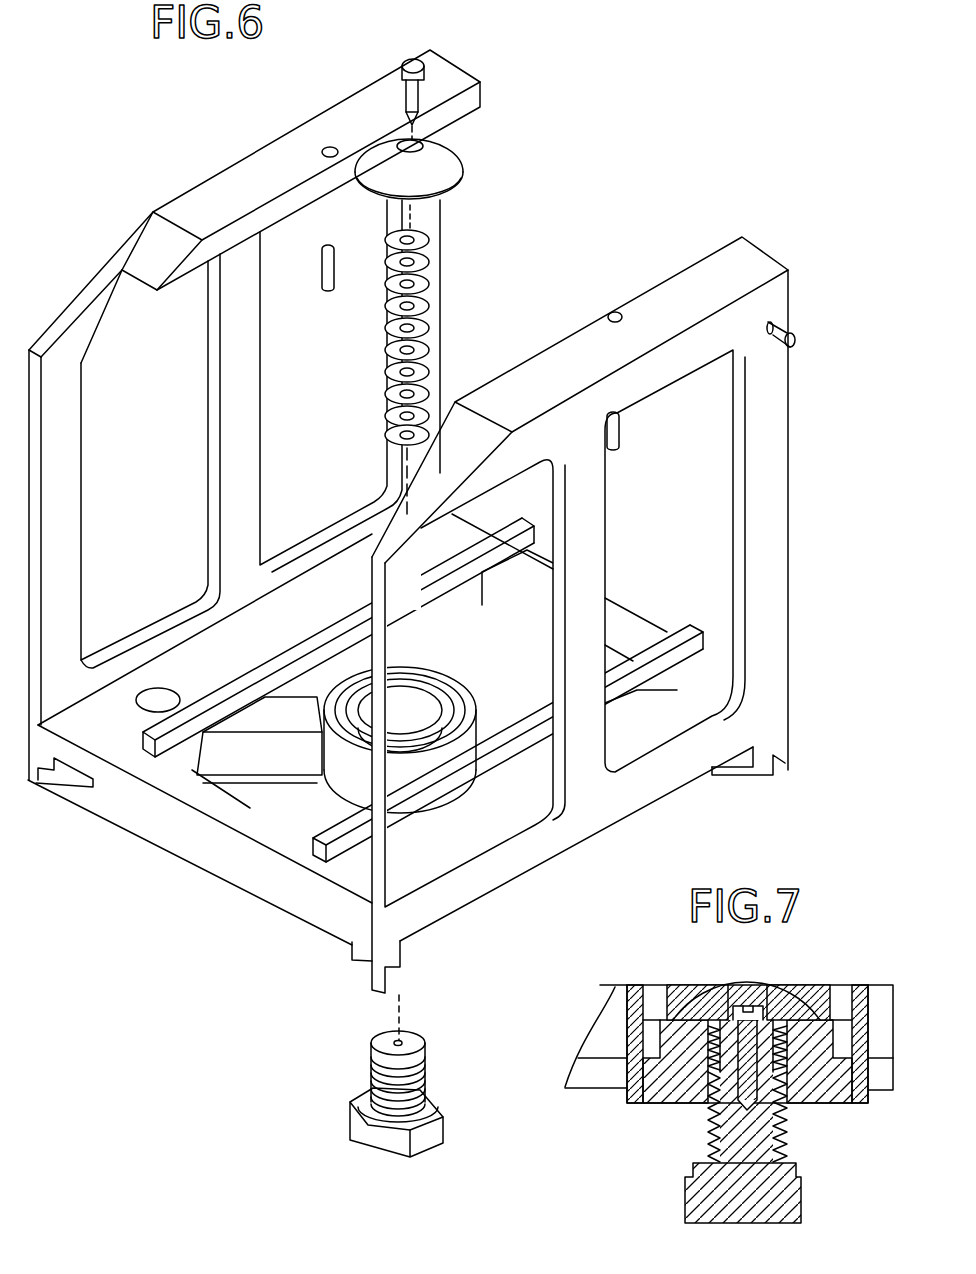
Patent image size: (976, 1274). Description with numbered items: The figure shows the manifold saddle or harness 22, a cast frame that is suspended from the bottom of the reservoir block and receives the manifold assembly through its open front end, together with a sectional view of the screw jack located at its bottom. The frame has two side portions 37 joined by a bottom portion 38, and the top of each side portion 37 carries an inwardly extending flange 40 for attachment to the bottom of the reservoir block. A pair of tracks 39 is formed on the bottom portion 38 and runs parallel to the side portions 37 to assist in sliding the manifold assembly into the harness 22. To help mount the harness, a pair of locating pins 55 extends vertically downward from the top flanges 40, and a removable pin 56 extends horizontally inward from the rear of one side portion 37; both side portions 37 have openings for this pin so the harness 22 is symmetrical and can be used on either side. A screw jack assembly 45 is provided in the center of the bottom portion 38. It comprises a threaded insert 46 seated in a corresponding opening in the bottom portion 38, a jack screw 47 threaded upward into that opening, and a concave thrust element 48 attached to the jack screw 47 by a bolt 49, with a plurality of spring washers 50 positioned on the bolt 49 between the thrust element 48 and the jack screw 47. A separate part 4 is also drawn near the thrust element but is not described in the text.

In FIG. 6, the disk 4 is at (447, 163).
In FIG. 6, the manifold harness 22 is at (100, 250).
In FIG. 6, the side portions 37 is at (63, 507).
In FIG. 6, the bottom portion 38 is at (203, 807).
In FIG. 7, the bottom portion 38 is at (585, 1075).
In FIG. 6, the tracks 39 is at (302, 677).
In FIG. 6, the flanges 40 is at (316, 188).
In FIG. 6, the screw jack assembly 45 is at (320, 1078).
In FIG. 7, the screw jack assembly 45 is at (651, 1153).
In FIG. 6, the threaded insert 46 is at (468, 690).
In FIG. 7, the threaded insert 46 is at (813, 1100).
In FIG. 6, the jack screw 47 is at (433, 1137).
In FIG. 7, the jack screw 47 is at (788, 1203).
In FIG. 7, the thrust element 48 is at (795, 1008).
In FIG. 6, the bolt 49 is at (420, 88).
In FIG. 7, the bolt 49 is at (743, 1006).
In FIG. 6, the spring washers 50 is at (433, 242).
In FIG. 7, the spring washers 50 is at (700, 1022).
In FIG. 6, the locating pins 55 is at (328, 288).
In FIG. 6, the removable pin 56 is at (795, 325).